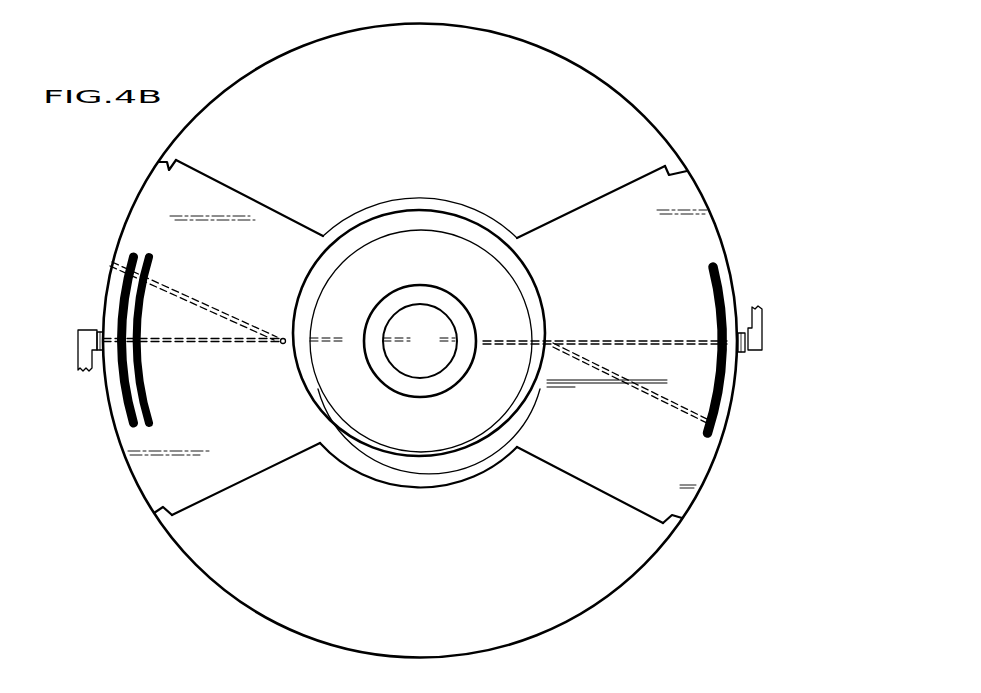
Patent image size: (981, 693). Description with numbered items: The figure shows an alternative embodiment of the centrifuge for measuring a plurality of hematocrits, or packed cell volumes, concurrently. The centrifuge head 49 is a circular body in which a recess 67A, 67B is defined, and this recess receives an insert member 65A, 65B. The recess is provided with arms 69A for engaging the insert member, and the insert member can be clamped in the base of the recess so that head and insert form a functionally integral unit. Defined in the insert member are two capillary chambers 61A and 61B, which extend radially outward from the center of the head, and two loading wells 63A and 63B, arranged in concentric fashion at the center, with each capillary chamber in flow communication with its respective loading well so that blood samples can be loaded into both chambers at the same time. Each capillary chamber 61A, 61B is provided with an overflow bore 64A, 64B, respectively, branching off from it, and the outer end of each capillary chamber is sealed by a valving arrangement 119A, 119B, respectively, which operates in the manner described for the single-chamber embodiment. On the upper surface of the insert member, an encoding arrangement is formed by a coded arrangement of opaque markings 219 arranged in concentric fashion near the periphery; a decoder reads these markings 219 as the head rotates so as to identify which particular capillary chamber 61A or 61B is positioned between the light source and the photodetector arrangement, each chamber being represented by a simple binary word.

The centrifuge head 49 is at (623, 105).
The loading well 63A is at (309, 274).
The loading well 63B is at (413, 294).
The recess 67A is at (235, 188).
The recess 67B is at (628, 185).
The arms 69A is at (163, 161).
The insert member 65A is at (138, 185).
The insert member 65B is at (717, 197).
The opaque markings 219 is at (468, 208).
The capillary chamber 61A is at (213, 340).
The capillary chamber 61B is at (648, 342).
The overflow bore 64A is at (178, 290).
The overflow bore 64B is at (663, 392).
The valving arrangement 119A is at (78, 342).
The valving arrangement 119B is at (762, 325).